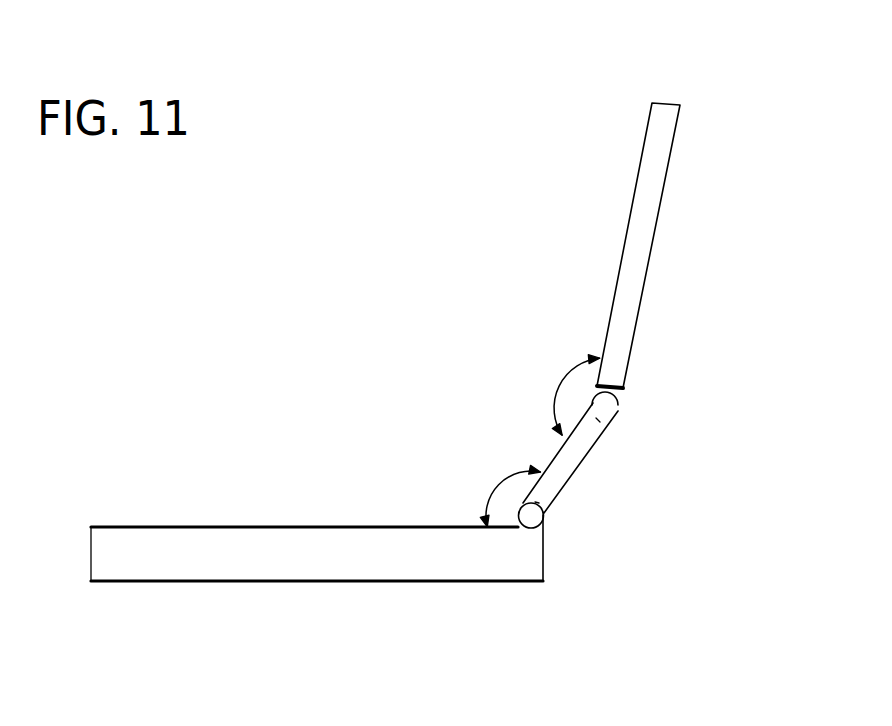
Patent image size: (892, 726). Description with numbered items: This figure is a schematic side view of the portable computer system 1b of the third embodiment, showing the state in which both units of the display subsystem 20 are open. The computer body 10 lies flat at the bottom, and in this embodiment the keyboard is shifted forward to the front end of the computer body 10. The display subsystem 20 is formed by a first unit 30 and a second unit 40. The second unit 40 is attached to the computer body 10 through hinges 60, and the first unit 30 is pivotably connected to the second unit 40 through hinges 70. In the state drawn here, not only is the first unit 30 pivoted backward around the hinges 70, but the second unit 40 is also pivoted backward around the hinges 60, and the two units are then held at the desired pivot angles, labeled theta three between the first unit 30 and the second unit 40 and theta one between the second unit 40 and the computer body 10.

The portable computer system 1b is at (157, 467).
The computer body 10 is at (307, 565).
The display subsystem 20 is at (475, 105).
The first unit 30 is at (633, 253).
The second unit 40 is at (565, 460).
The hinges 60 is at (538, 517).
The hinges 70 is at (602, 410).